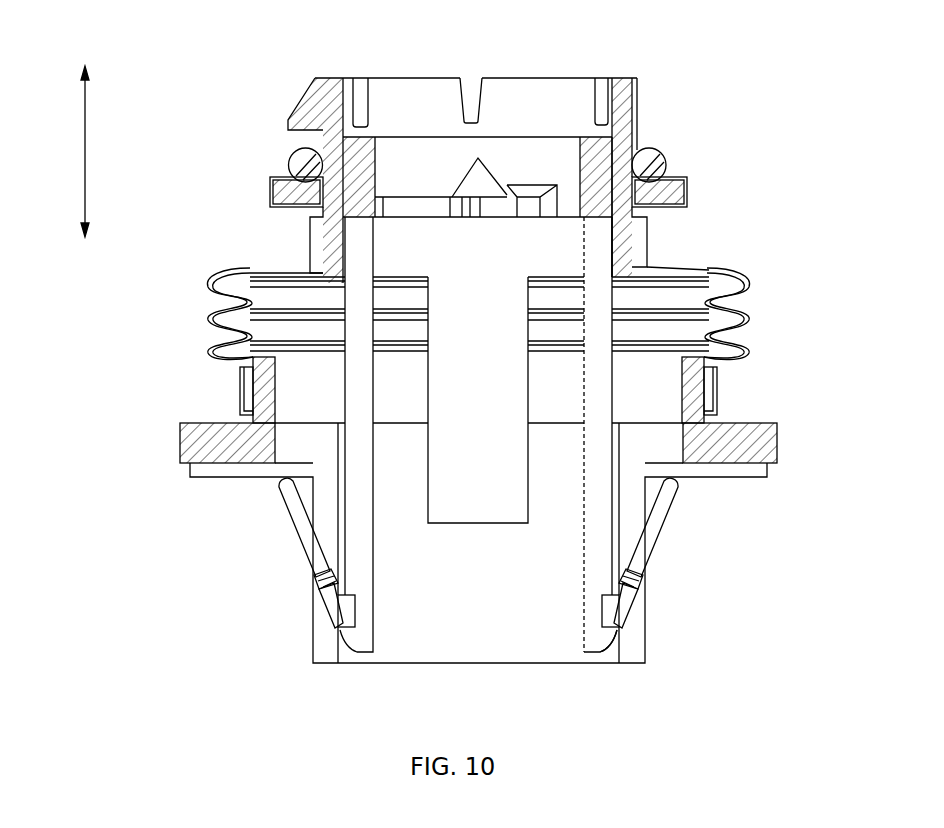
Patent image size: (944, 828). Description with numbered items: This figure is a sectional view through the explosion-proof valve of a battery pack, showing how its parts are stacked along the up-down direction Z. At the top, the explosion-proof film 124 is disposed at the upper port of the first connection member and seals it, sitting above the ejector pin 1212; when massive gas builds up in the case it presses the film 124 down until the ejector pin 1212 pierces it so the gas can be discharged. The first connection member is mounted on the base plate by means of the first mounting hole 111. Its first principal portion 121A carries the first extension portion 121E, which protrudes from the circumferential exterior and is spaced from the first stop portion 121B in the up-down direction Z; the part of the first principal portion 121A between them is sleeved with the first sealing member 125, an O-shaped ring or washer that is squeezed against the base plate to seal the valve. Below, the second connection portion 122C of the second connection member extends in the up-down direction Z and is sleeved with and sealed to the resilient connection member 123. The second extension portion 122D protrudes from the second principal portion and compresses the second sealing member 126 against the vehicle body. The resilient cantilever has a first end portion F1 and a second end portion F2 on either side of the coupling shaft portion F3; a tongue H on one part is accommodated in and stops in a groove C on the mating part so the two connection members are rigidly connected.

The explosion-proof film 124 is at (427, 120).
The ejector pin 1212 is at (483, 182).
The first mounting hole 111 is at (313, 145).
The first sealing member 125 is at (290, 165).
The first principal portion 121A is at (620, 163).
The first extension portion 121E is at (650, 193).
The first stop portion 121B is at (617, 243).
The resilient connection member 123 is at (720, 327).
The second connection portion 122C is at (245, 378).
The second extension portion 122D is at (182, 425).
The second sealing member 126 is at (225, 472).
The first end portion F1 is at (623, 598).
The second end portion F2 is at (668, 492).
The coupling shaft portion F3 is at (637, 570).
The groove C is at (600, 593).
The tongue H is at (603, 640).
The up-down direction Z is at (68, 151).